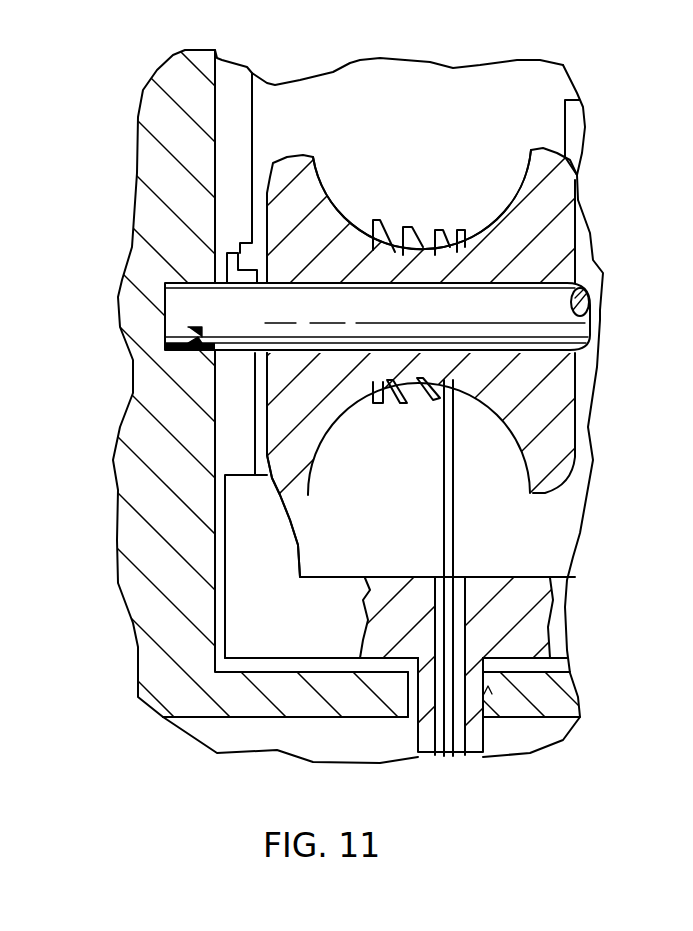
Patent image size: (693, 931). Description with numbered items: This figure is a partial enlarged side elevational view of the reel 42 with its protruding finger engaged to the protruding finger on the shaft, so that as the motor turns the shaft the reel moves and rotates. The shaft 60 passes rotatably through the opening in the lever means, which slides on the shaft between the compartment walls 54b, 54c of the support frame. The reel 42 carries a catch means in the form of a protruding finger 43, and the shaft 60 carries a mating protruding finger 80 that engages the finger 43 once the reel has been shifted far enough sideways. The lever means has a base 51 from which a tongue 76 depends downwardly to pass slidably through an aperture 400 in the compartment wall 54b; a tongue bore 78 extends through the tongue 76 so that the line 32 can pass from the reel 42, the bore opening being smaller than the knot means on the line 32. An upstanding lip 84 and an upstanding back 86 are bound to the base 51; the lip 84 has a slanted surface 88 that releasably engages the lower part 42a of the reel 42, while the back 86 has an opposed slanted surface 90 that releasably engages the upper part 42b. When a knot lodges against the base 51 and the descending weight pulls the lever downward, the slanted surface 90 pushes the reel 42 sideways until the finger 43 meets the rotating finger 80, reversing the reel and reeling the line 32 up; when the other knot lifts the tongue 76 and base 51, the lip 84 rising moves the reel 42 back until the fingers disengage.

The line 32 is at (455, 562).
The reel 42 is at (265, 197).
The lower part of the reel 42a is at (307, 458).
The upper part of the reel 42b is at (545, 165).
The catch means (protruding finger) 43 is at (218, 237).
The base 51 is at (327, 628).
The compartment wall 54b is at (283, 702).
The compartment wall 54c is at (166, 600).
The shaft 60 is at (165, 352).
The tongue 76 is at (487, 740).
The tongue bore 78 is at (458, 745).
The catch means (protruding finger) 80 is at (228, 258).
The upstanding lip 84 is at (255, 525).
The upstanding back 86 is at (587, 112).
The slanted surface 88 is at (295, 528).
The slanted surface 90 is at (575, 167).
The aperture 400 is at (540, 718).